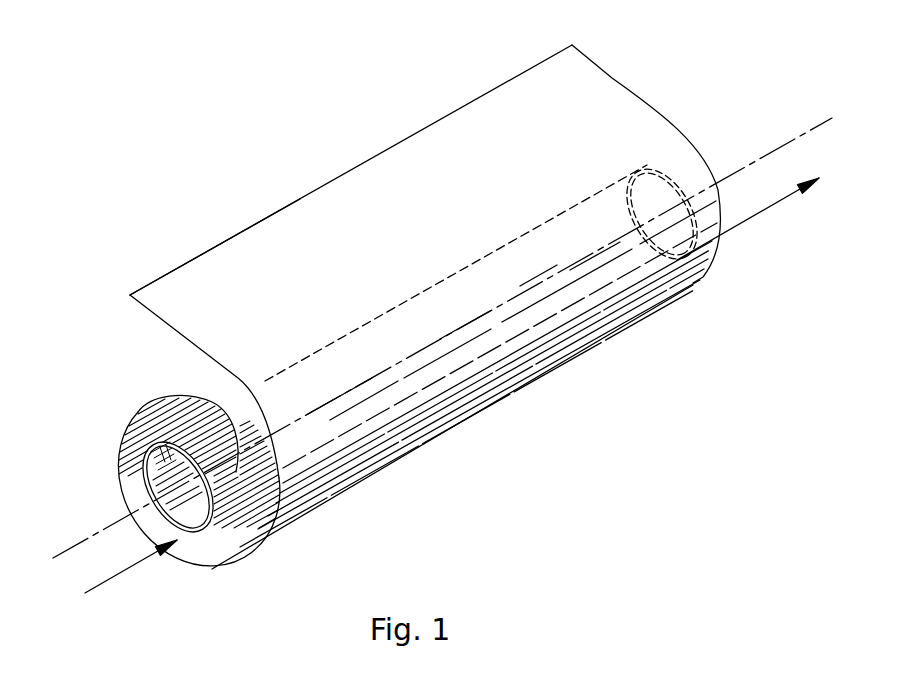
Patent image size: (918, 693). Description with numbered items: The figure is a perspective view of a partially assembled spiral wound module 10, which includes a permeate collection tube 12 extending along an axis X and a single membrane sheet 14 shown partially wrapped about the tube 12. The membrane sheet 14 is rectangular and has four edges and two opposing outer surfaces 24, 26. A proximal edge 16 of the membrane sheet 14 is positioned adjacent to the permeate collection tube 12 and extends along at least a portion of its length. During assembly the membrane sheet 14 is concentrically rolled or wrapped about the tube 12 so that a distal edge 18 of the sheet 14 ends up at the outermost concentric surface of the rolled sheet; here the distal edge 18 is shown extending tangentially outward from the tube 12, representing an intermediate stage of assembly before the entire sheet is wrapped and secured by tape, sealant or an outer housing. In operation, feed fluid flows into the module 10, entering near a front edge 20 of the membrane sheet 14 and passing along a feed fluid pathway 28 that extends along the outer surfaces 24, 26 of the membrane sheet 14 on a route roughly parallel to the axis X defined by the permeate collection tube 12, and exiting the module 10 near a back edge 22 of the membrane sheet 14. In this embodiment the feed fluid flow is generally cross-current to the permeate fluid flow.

The spiral wound module 10 is at (280, 132).
The permeate collection tube 12 is at (188, 442).
The membrane sheet 14 is at (518, 397).
The proximal edge 16 is at (240, 471).
The distal edge 18 is at (428, 126).
The front edge 20 is at (203, 570).
The back edge 22 is at (606, 62).
The outer surface 24 is at (158, 323).
The outer surface 26 is at (187, 273).
The feed fluid pathway 28 is at (105, 583).
The axis X is at (814, 125).